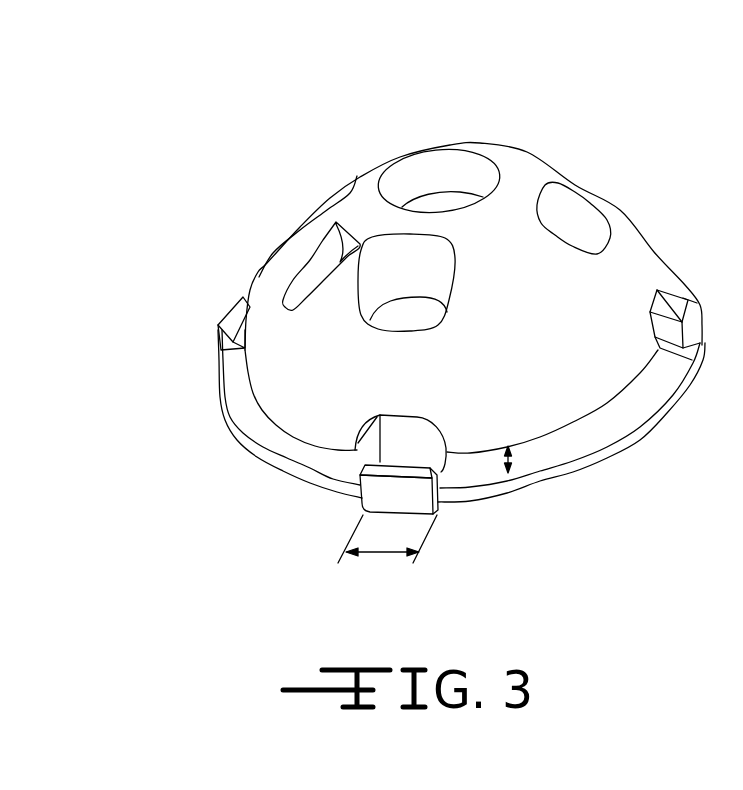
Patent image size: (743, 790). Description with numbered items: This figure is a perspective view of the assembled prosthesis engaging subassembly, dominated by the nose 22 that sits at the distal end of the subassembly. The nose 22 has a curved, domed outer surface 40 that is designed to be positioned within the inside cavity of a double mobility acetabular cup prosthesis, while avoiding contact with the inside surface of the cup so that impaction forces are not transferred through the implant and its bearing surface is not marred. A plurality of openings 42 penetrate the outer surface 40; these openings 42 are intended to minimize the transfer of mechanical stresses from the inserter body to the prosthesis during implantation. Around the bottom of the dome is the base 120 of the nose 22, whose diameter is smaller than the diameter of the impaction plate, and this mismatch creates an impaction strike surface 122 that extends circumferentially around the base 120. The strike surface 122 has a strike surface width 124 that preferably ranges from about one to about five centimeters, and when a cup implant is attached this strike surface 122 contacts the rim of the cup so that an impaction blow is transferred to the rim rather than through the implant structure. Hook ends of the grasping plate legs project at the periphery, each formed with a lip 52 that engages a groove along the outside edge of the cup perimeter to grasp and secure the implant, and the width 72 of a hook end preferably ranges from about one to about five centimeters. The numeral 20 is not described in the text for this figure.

The cap assembly 20 is at (480, 285).
The nose 22 is at (518, 161).
The domed outer surface 40 is at (553, 361).
The openings 42 is at (567, 214).
The lip 52 is at (690, 312).
The width of the hook end 72 is at (380, 555).
The base of the domed nose 120 is at (265, 441).
The impaction strike surface 122 is at (303, 445).
The strike surface width 124 is at (512, 462).